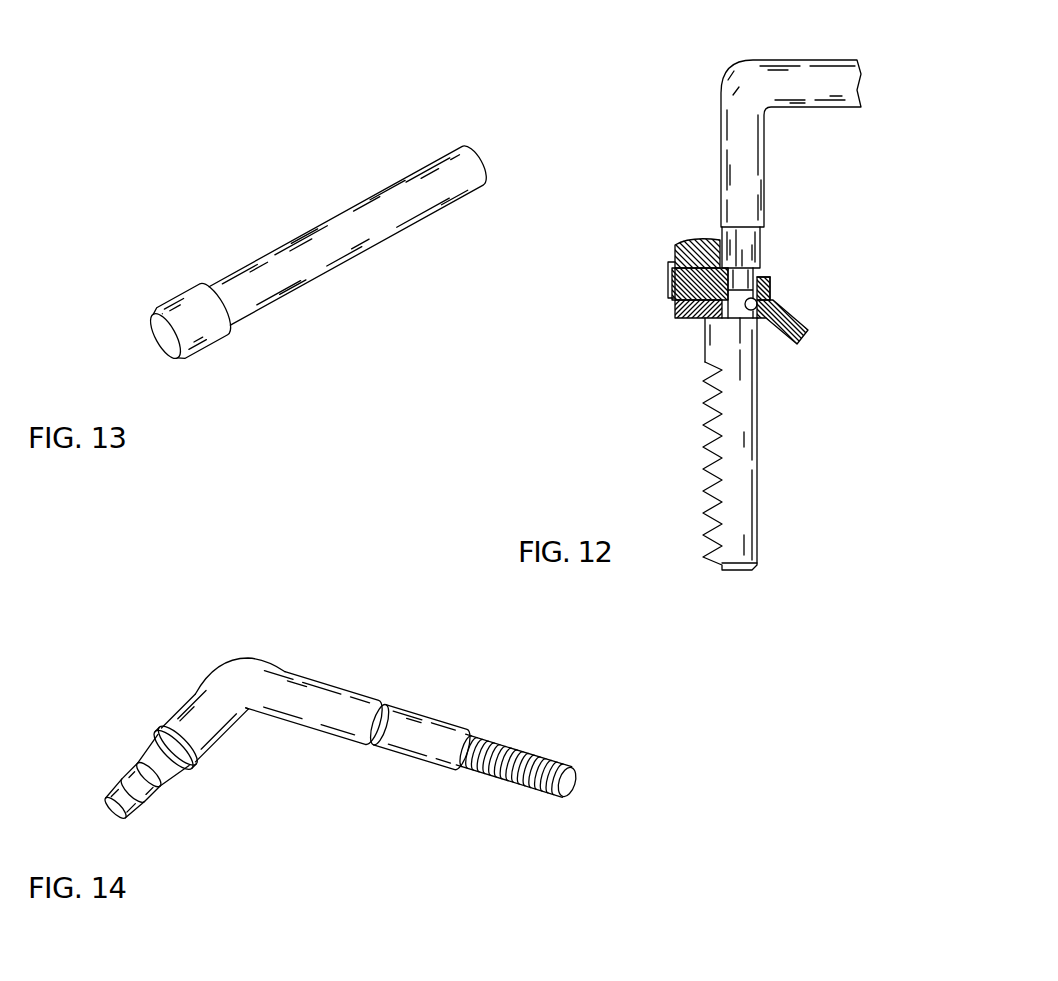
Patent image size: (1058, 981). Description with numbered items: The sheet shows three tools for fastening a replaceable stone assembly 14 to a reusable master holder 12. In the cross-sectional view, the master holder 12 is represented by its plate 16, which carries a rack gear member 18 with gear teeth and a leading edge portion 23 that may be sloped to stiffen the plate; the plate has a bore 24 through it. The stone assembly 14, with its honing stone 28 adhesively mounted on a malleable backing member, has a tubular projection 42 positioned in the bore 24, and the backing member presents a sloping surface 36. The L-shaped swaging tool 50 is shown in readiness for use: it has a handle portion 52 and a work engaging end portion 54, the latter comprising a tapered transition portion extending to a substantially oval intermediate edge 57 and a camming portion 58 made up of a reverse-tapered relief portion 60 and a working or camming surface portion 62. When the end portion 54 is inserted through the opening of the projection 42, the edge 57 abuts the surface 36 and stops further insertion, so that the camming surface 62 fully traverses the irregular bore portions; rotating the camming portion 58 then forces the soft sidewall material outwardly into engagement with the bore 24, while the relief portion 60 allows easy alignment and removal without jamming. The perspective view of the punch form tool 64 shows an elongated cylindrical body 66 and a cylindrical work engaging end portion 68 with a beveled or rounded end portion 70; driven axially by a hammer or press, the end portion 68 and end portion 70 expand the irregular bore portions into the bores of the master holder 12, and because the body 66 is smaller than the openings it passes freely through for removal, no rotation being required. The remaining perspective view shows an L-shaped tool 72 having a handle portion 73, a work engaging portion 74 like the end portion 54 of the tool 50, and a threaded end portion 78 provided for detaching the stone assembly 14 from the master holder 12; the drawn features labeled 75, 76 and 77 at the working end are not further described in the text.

In FIG. 12, the master holder 12 is at (674, 320).
In FIG. 12, the replaceable stone assembly 14 is at (778, 292).
In FIG. 12, the plate 16 is at (672, 306).
In FIG. 12, the rack gear member 18 is at (757, 506).
In FIG. 12, the leading edge portion 23 is at (805, 333).
In FIG. 12, the bore 24 is at (742, 308).
In FIG. 12, the honing stone 28 is at (675, 243).
In FIG. 12, the sloping surface 36 is at (768, 278).
In FIG. 12, the tubular projection 42 is at (714, 320).
In FIG. 12, the swaging tool 50 is at (775, 56).
In FIG. 12, the handle portion 52 is at (818, 88).
In FIG. 12, the work engaging end portion 54 is at (772, 238).
In FIG. 12, the intermediate edge 57 is at (762, 272).
In FIG. 12, the camming portion 58 is at (758, 304).
In FIG. 12, the relief portion 60 is at (747, 266).
In FIG. 12, the camming surface portion 62 is at (755, 330).
In FIG. 13, the tool 64 is at (330, 193).
In FIG. 13, the cylindrical body 66 is at (408, 207).
In FIG. 13, the work engaging end portion 68 is at (205, 322).
In FIG. 13, the rounded end portion 70 is at (153, 312).
In FIG. 14, the tool 72 is at (330, 643).
In FIG. 14, the handle portion 73 is at (428, 738).
In FIG. 14, the work engaging portion 74 is at (131, 749).
In FIG. 14, the tapered collar 75 is at (178, 773).
In FIG. 14, the cylindrical portion 76 is at (152, 797).
In FIG. 14, the blade 77 is at (138, 815).
In FIG. 14, the threaded end portion 78 is at (503, 788).